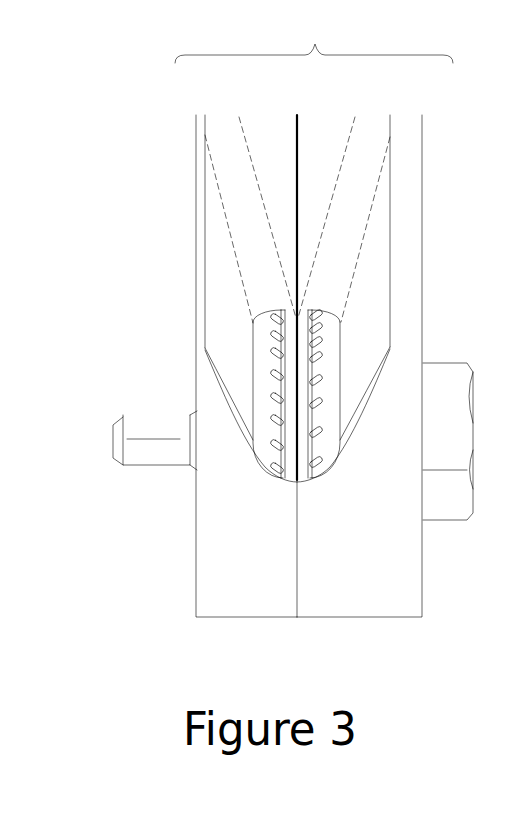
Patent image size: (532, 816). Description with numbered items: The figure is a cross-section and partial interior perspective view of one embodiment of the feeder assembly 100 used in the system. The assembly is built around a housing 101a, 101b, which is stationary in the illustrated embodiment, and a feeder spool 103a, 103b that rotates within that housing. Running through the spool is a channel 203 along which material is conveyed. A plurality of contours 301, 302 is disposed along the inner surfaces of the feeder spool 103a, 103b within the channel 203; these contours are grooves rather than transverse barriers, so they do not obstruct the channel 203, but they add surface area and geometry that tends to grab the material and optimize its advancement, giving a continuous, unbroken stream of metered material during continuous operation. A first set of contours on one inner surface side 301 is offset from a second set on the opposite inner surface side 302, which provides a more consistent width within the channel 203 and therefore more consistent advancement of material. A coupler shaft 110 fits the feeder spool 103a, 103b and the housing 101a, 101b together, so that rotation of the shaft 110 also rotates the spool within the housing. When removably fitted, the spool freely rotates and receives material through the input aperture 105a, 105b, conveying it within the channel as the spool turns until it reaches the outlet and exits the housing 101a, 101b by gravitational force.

The connector assembly 100 is at (314, 42).
The housing 101a is at (217, 602).
The housing 101b is at (408, 602).
The feeder spool 103a is at (253, 320).
The feeder spool 103b is at (327, 340).
The input aperture 105a is at (259, 206).
The input aperture 105b is at (336, 224).
The channel 203 is at (314, 366).
The first set of contours 301 is at (281, 418).
The second set of contours 302 is at (318, 377).
The coupler shaft 110 is at (132, 428).